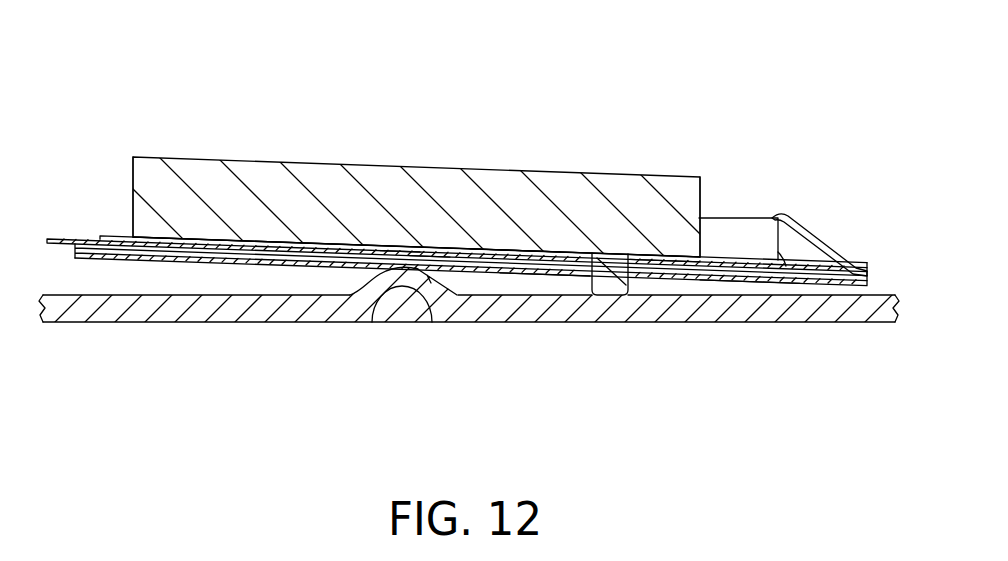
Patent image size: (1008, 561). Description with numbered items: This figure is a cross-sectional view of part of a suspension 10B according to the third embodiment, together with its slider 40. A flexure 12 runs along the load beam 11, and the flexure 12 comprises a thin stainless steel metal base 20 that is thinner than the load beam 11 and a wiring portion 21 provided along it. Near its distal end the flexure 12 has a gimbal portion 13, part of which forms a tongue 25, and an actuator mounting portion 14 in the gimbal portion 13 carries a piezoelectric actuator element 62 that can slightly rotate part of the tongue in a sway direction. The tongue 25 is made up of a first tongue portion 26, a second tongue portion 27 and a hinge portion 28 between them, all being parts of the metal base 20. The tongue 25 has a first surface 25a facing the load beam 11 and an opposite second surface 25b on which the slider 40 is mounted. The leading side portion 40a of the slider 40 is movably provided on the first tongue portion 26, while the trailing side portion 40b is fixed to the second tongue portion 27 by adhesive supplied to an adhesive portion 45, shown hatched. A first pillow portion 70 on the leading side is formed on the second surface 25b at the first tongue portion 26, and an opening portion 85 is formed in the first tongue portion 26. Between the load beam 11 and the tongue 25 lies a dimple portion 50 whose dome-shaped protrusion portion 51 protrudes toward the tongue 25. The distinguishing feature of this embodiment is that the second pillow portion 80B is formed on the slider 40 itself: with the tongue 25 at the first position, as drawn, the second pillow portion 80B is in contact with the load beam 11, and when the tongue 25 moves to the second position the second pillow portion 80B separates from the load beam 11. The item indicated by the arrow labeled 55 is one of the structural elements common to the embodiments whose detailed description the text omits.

The suspension 10B is at (832, 100).
The load beam 11 is at (282, 313).
The flexure 12 is at (108, 205).
The gimbal portion 13 is at (549, 396).
The actuator mounting portion 14 is at (757, 211).
The metal base 20 is at (173, 263).
The wiring portion 21 is at (117, 239).
The tongue 25 is at (318, 275).
The first surface 25a is at (477, 274).
The second surface 25b is at (485, 249).
The first tongue portion 26 is at (748, 282).
The second tongue portion 27 is at (218, 268).
The hinge portion 28 is at (400, 250).
The slider 40 is at (302, 175).
The leading side portion 40a is at (673, 185).
The trailing side portion 40b is at (148, 168).
The adhesive portion 45 is at (240, 239).
The dimple portion 50 is at (402, 288).
The protrusion portion 51 is at (428, 252).
The mounting structure 55 is at (99, 364).
The actuator element 62 is at (733, 228).
The first pillow portion 70 is at (663, 252).
The second pillow portion 80B is at (607, 292).
The opening portion 85 is at (553, 275).